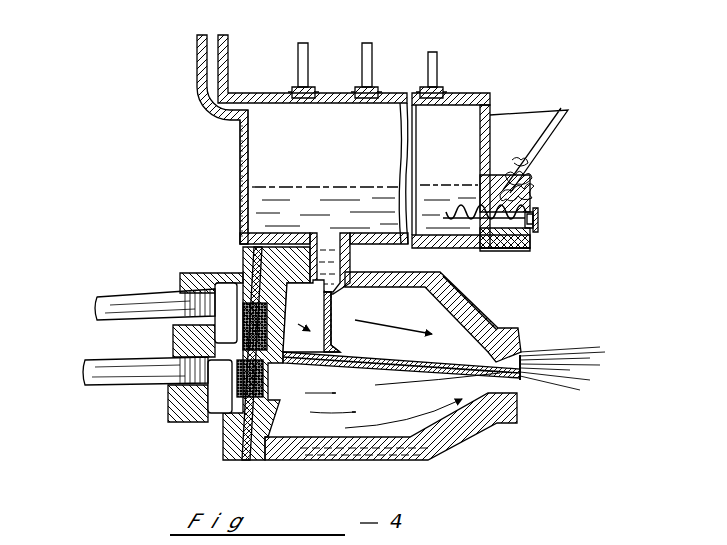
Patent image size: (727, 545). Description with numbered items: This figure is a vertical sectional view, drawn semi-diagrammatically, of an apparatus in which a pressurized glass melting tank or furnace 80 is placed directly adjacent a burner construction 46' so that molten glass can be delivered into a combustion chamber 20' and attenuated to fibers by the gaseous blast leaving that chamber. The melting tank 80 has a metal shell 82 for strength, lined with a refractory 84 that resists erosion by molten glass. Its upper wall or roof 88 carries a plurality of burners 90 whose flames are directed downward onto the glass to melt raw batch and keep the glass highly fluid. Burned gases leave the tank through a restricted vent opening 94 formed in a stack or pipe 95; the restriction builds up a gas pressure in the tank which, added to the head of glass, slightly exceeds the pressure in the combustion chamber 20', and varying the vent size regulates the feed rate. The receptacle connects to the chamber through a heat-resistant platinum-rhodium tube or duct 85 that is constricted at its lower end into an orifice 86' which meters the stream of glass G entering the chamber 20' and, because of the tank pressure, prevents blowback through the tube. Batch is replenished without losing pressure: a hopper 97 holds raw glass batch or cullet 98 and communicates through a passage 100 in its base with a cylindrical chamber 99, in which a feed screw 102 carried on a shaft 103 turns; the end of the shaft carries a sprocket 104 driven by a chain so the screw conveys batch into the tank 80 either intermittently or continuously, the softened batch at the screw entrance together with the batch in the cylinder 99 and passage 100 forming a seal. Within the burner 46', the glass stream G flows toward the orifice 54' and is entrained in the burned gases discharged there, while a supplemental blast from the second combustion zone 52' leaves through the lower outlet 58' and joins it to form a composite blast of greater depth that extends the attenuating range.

The restricted vent opening 94 is at (212, 40).
The stack or pipe 95 is at (224, 62).
The melting tank or furnace 80 is at (238, 147).
The refractory 84 is at (240, 170).
The metal shell 82 is at (245, 212).
The burners 90 is at (304, 88).
The tube or duct 85 is at (346, 262).
The upper wall or roof 88 is at (473, 94).
The hopper 97 is at (560, 120).
The raw glass batch or cullet 98 is at (540, 158).
The passage 100 is at (530, 192).
The sprocket 104 is at (538, 220).
The shaft 103 is at (533, 230).
The feed screw 102 is at (490, 248).
The cylindrical chamber 99 is at (500, 248).
The restricted opening or orifice 86' is at (254, 353).
The stream of glass G is at (333, 318).
The combustion chamber 20' is at (433, 317).
The combustion chamber or zone 52' is at (401, 390).
The orifice 54' is at (562, 367).
The liquid outlet 58' is at (541, 383).
The burner construction 46' is at (391, 437).